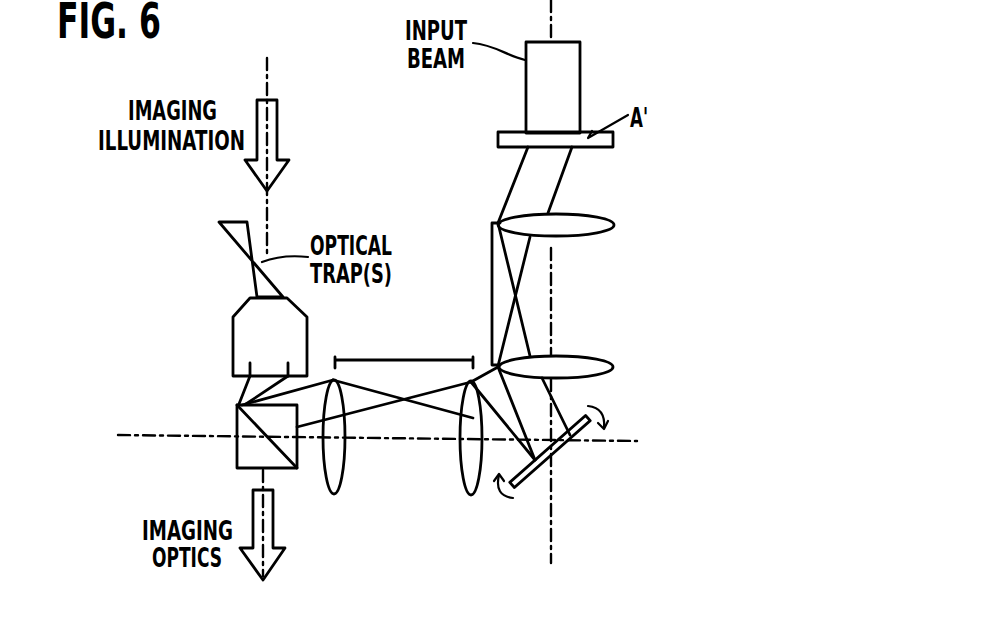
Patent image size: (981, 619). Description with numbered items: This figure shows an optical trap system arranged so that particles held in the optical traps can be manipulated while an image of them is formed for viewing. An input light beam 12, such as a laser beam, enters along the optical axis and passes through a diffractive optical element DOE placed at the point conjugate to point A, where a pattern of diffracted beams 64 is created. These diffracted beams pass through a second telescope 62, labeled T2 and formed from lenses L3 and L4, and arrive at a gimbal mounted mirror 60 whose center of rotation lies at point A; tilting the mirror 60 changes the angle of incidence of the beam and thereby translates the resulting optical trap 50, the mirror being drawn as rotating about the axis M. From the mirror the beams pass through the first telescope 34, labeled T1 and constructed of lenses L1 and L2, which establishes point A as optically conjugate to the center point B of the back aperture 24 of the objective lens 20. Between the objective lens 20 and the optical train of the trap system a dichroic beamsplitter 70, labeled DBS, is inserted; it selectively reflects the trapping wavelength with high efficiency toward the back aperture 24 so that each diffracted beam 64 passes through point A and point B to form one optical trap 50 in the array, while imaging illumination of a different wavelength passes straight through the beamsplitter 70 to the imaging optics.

The light beam 12 is at (571, 68).
The objective lens 20 is at (298, 328).
The back aperture 24 is at (236, 381).
The telescope 34 is at (403, 358).
The optical trap 50 is at (252, 259).
The gimbal mounted mirror 60 is at (552, 488).
The second telescope 62 is at (491, 261).
The diffracted beams 64 is at (506, 437).
The dichroic beamsplitter 70 is at (278, 470).
The point A is at (560, 450).
The center point B is at (241, 398).
The mirror axis M is at (530, 533).
The telescope T1 is at (390, 344).
The telescope T2 is at (474, 294).
The lens L1 is at (470, 456).
The lens L2 is at (333, 454).
The lens L3 is at (570, 228).
The lens L4 is at (571, 371).
The dichroic beam splitter DBS is at (247, 452).
The diffractive optical element DOE is at (531, 139).